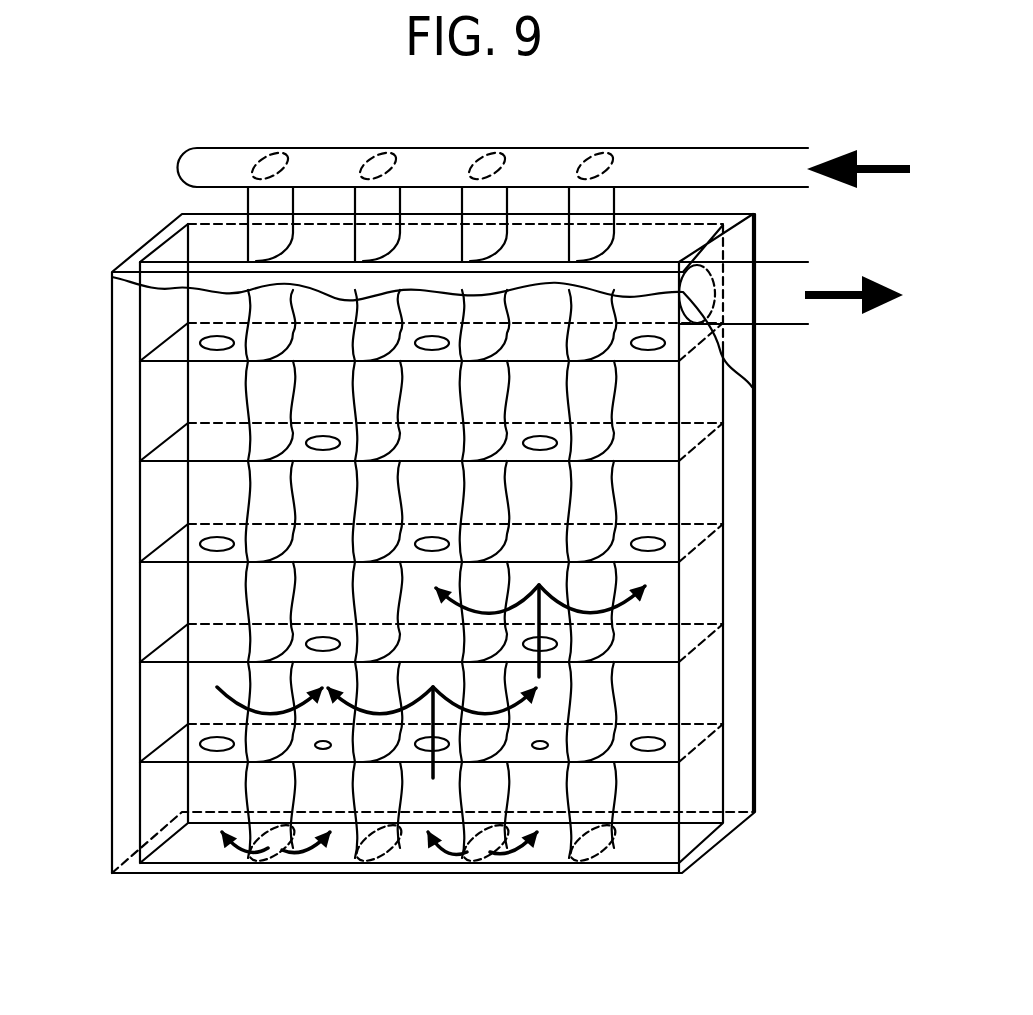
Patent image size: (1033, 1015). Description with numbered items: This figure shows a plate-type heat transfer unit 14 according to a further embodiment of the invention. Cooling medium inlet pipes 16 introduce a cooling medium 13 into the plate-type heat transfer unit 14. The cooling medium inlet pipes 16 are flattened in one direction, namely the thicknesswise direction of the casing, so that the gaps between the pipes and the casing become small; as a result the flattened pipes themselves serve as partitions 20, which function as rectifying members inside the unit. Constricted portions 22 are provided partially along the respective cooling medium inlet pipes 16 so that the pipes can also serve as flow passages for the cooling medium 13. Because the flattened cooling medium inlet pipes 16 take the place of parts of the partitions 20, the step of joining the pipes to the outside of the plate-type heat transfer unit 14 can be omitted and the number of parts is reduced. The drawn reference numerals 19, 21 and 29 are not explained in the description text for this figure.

The cooling medium 13 is at (858, 216).
The plate-type heat transfer unit 14 is at (125, 612).
The cooling medium inlet pipes 16 is at (705, 162).
The top plate 19 is at (131, 266).
The partitions 20 is at (697, 640).
The shelf openings 21 is at (652, 542).
The constricted portions 22 is at (245, 513).
The outlet pipe 29 is at (778, 275).